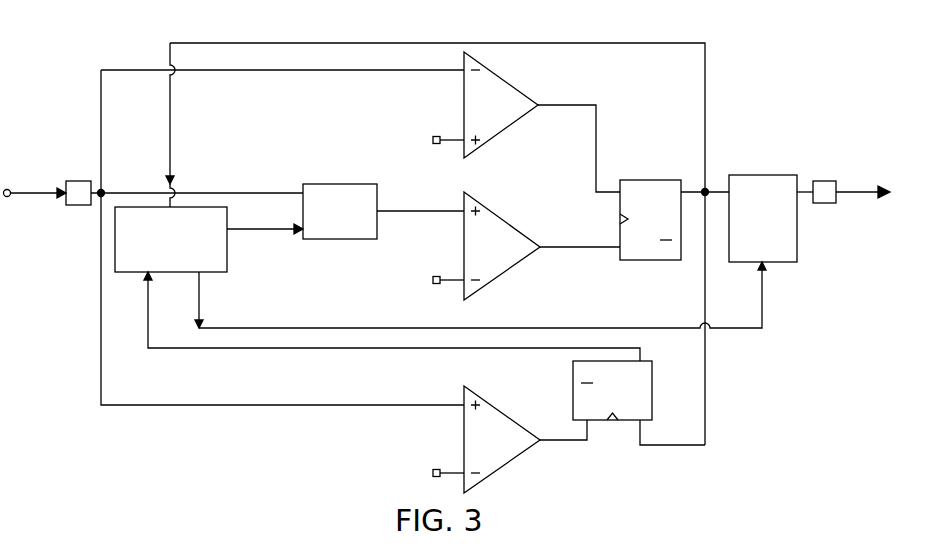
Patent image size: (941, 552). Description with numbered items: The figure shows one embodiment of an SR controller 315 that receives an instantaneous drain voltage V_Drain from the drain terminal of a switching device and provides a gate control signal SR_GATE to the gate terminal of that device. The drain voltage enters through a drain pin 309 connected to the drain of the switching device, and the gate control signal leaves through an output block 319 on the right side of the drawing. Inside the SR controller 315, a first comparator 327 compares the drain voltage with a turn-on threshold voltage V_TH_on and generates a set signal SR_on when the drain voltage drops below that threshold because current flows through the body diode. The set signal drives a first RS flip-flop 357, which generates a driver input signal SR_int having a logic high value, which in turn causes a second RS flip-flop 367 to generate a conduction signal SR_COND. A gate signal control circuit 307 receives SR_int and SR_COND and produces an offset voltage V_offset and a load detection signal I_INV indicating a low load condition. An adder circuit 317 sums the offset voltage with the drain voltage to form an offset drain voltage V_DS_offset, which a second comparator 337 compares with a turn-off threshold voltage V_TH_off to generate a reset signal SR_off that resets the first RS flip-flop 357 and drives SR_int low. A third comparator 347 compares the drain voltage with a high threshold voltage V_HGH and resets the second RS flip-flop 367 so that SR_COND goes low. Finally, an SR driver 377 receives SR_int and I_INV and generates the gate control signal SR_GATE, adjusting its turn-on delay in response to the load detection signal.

The SR controller 315 is at (76, 47).
The drain pin 309 is at (66, 205).
The gate signal control circuit 307 is at (127, 272).
The adder circuit 317 is at (340, 239).
The first comparator 327 is at (512, 82).
The second comparator 337 is at (505, 214).
The third comparator 347 is at (500, 409).
The first RS flip-flop 357 is at (626, 180).
The second RS flip-flop 367 is at (652, 384).
The SR driver 377 is at (758, 175).
The gate output terminal block 319 is at (837, 203).